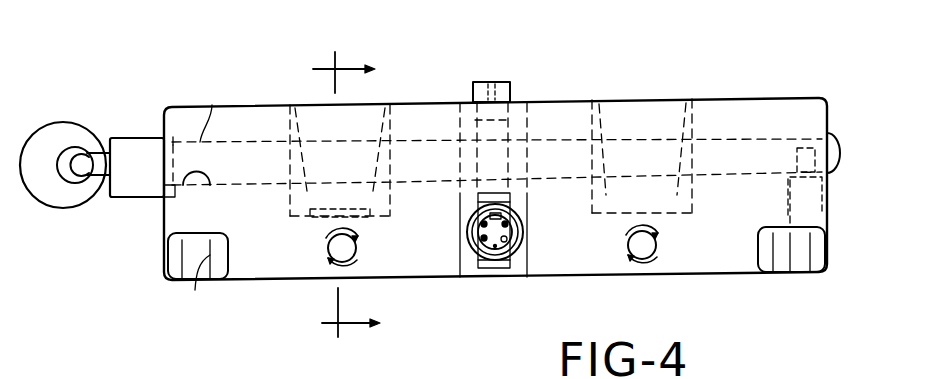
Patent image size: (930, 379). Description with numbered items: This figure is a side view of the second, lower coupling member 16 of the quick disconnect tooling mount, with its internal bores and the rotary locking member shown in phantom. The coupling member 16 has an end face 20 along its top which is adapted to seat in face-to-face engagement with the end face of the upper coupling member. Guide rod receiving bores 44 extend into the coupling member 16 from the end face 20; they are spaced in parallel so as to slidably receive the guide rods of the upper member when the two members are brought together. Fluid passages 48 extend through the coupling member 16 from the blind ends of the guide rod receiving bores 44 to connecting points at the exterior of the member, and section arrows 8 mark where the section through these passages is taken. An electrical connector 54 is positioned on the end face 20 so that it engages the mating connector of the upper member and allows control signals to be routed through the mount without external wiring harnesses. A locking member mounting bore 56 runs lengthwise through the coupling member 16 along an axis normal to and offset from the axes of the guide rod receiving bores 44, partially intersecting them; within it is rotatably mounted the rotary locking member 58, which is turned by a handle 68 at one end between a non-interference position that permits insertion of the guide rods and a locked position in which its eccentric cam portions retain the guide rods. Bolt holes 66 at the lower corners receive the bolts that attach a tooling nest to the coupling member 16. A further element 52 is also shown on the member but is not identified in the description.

The section line 8- 8 is at (357, 199).
The second coupling member 16 is at (828, 118).
The end face 20 is at (727, 98).
The guide rod receiving bores 44 is at (642, 138).
The fluid passages 48 is at (356, 250).
The electrical connector 52 is at (518, 165).
The electrical connector 54 is at (510, 82).
The locking member mounting bore 56 is at (205, 190).
The rotary locking member 58 is at (212, 100).
The bolt holes 66 is at (197, 287).
The handle 68 is at (62, 123).